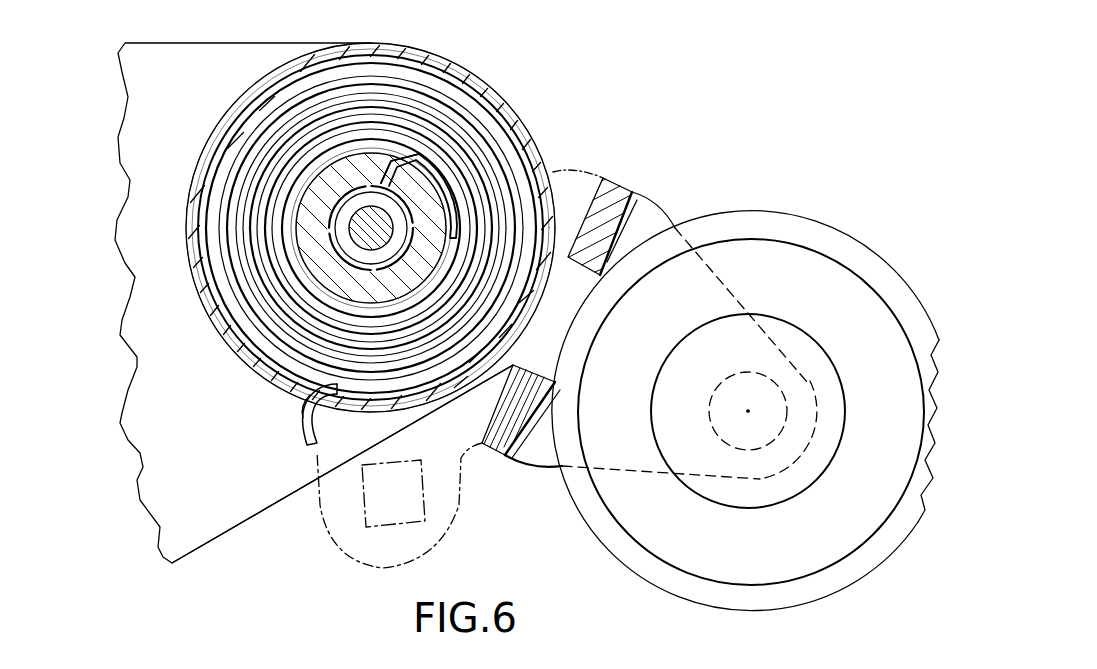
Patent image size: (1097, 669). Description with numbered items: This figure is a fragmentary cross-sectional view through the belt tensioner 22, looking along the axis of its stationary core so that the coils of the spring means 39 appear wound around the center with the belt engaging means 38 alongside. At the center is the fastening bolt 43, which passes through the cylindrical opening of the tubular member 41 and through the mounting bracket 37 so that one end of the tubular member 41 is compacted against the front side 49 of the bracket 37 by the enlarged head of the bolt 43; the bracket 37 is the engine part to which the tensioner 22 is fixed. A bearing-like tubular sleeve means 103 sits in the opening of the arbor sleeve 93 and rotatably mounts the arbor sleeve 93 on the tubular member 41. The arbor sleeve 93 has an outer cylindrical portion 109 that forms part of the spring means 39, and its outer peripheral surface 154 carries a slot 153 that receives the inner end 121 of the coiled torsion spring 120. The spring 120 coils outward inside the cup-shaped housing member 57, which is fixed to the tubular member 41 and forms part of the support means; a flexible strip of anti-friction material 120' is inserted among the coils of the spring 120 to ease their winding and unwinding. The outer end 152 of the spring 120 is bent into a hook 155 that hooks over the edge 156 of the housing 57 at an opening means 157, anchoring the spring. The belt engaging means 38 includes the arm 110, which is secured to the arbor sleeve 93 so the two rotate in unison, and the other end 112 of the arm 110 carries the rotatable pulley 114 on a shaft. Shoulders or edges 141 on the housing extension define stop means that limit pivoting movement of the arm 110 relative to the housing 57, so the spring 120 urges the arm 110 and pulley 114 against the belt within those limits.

The belt tensioner 22 is at (670, 161).
The mounting bracket 37 is at (157, 473).
The belt engaging means 38 is at (744, 205).
The spring means 39 is at (492, 112).
The tubular member 41 is at (345, 243).
The fastening bolt 43 is at (339, 232).
The front side of the bracket 49 is at (203, 52).
The cup-shaped housing member 57 is at (360, 48).
The arbor sleeve 93 is at (317, 265).
The tubular sleeve means 103 is at (300, 200).
The outer cylindrical portion 109 is at (303, 265).
The arm 110 is at (533, 450).
The other end of the arm 112 is at (807, 382).
The rotatable pulley 114 is at (846, 240).
The coiled spring 120 is at (370, 207).
The flexible strip of anti-friction material 120' is at (305, 227).
The inner end of the coiled spring 121 is at (430, 177).
The shoulders or edges 141 is at (478, 82).
The outer end of the coiled spring 152 is at (312, 435).
The slot 153 is at (385, 162).
The outer peripheral surface 154 is at (327, 212).
The hook 155 is at (312, 408).
The edge of the housing 156 is at (343, 405).
The opening means 157 is at (335, 389).